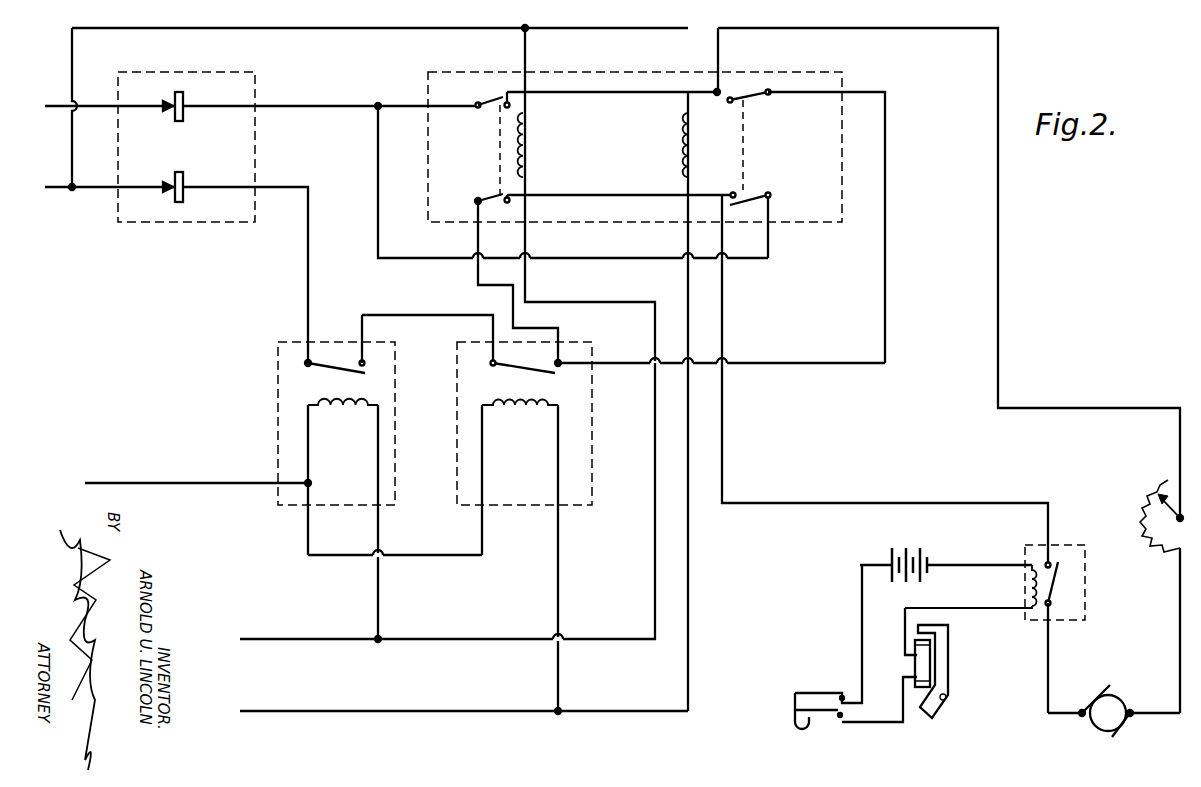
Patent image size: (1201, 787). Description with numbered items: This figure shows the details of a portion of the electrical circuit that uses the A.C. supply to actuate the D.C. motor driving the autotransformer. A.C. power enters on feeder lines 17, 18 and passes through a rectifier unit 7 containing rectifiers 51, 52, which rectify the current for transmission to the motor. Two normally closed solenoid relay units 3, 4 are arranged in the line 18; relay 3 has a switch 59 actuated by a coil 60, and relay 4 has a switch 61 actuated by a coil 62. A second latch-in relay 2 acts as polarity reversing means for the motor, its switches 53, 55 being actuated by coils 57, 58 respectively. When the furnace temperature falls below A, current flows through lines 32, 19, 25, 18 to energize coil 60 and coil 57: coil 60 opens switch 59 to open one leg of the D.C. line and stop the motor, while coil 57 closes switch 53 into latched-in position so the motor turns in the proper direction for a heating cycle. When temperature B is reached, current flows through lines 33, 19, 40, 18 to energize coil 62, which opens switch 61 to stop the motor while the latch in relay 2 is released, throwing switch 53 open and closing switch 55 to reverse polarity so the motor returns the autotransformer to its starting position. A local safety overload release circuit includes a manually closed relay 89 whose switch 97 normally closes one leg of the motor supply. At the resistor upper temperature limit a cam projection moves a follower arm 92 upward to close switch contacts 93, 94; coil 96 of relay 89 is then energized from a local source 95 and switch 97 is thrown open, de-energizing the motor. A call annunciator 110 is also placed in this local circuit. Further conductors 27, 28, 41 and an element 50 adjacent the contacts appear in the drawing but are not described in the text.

The latch-in relay 2 is at (842, 82).
The solenoid relay unit 3 is at (278, 378).
The solenoid relay unit 4 is at (582, 458).
The rectifier unit 7 is at (146, 74).
The feeder line 17 is at (52, 106).
The feeder line 18 is at (56, 192).
The line 19 is at (186, 483).
The line 25 is at (398, 22).
The conductor 27 is at (999, 262).
The conductor 28 is at (723, 444).
The line 32 is at (606, 640).
The line 33 is at (689, 635).
The line 40 is at (426, 556).
The conductor 41 is at (886, 235).
The contact arm 50 is at (809, 688).
The rectifier 51 is at (183, 114).
The rectifier 52 is at (183, 180).
The switch 53 is at (500, 133).
The switch 55 is at (745, 132).
The coil 57 is at (530, 123).
The coil 58 is at (684, 142).
The switch 59 is at (338, 373).
The coil 60 is at (348, 414).
The switch 61 is at (522, 373).
The coil 62 is at (524, 414).
The safety relay 89 is at (1086, 553).
The follower arm 92 is at (797, 730).
The switch contact 93 is at (840, 695).
The switch contact 94 is at (840, 718).
The local source 95 is at (905, 550).
The coil 96 is at (1026, 583).
The switch 97 is at (1050, 588).
The call annunciator 110 is at (949, 664).